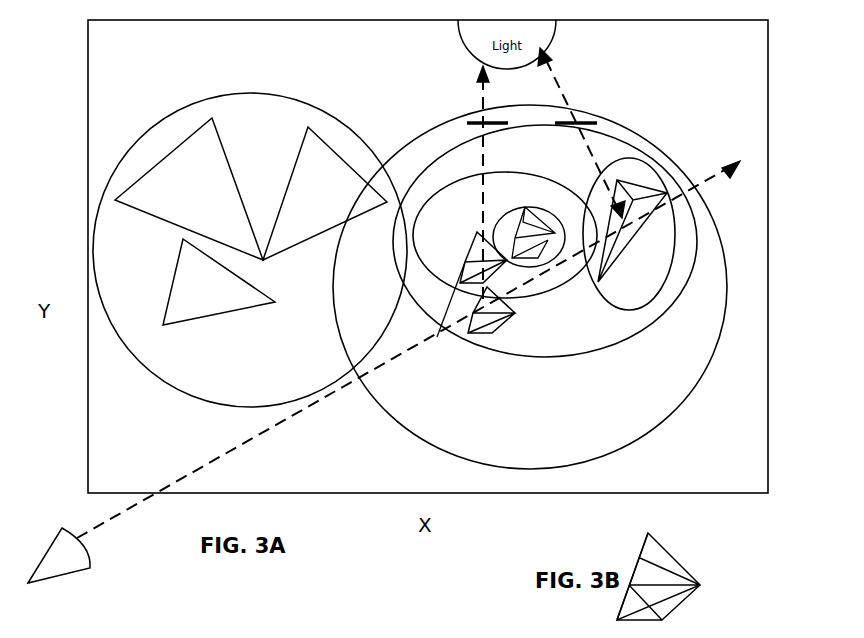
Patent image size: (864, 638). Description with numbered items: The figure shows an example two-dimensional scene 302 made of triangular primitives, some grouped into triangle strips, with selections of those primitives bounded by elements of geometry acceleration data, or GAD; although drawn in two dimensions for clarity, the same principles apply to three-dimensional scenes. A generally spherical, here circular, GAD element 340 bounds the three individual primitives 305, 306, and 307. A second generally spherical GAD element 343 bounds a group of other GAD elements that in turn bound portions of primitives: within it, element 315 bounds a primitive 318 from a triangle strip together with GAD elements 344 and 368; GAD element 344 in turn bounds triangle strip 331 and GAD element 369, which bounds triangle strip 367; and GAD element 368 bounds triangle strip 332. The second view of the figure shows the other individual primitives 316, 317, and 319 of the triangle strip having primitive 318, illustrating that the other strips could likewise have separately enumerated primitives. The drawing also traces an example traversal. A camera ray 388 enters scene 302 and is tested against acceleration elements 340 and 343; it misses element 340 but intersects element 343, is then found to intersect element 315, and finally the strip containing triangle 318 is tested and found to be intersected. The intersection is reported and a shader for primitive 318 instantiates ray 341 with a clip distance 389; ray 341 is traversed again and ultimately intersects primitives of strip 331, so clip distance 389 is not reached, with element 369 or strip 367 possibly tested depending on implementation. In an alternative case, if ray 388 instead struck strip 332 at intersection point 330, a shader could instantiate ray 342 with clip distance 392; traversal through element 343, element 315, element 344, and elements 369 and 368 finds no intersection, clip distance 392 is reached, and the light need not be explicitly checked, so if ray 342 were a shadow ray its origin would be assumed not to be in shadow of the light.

In FIG. 3A, the scene 302 is at (768, 362).
In FIG. 3A, the primitive 305 is at (189, 189).
In FIG. 3A, the primitive 306 is at (325, 193).
In FIG. 3A, the primitive 307 is at (219, 282).
In FIG. 3A, the GAD element 315 is at (600, 350).
In FIG. 3B, the tetrahedron face 316 is at (660, 543).
In FIG. 3B, the tetrahedron edge 317 is at (625, 598).
In FIG. 3A, the primitive 318 is at (497, 333).
In FIG. 3B, the primitive 318 is at (677, 607).
In FIG. 3B, the tetrahedron face 319 is at (685, 570).
In FIG. 3A, the intersection point 330 is at (618, 195).
In FIG. 3A, the triangle strip 331 is at (458, 238).
In FIG. 3A, the triangle strip 332 is at (604, 268).
In FIG. 3A, the GAD element 340 is at (153, 373).
In FIG. 3A, the ray 341 is at (484, 153).
In FIG. 3A, the ray 342 is at (562, 97).
In FIG. 3A, the GAD element 343 is at (388, 413).
In FIG. 3A, the GAD element 344 is at (437, 337).
In FIG. 3A, the triangle strip 367 is at (552, 230).
In FIG. 3A, the GAD element 368 is at (623, 309).
In FIG. 3A, the GAD element 369 is at (531, 263).
In FIG. 3A, the camera ray 388 is at (258, 431).
In FIG. 3A, the clip distance 389 is at (472, 120).
In FIG. 3A, the clip distance 392 is at (580, 120).